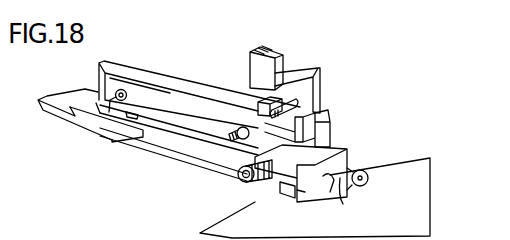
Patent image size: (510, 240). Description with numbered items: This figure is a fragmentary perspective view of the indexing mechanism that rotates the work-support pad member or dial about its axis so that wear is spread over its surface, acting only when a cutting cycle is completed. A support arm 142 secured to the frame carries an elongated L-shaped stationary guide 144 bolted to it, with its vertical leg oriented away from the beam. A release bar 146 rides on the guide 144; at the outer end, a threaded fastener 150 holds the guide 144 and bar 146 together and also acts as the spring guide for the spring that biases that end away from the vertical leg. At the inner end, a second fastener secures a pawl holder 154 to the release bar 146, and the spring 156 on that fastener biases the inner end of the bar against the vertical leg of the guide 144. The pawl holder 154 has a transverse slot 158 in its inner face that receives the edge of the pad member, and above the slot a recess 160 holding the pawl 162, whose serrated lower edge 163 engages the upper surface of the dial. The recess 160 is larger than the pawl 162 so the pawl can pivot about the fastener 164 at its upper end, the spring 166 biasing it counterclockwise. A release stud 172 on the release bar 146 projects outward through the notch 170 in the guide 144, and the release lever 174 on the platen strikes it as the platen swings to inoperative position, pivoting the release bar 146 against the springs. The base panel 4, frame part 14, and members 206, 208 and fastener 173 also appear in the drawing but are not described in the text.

The base panel 4 is at (418, 158).
The frame 14 is at (138, 233).
The support arm 142 is at (55, 97).
The stationary guide 144 is at (141, 76).
The release bar 146 is at (163, 89).
The threaded fastener 150 is at (97, 133).
The pawl holder 154 is at (340, 143).
The spring 156 is at (245, 185).
The transverse slot 158 is at (260, 172).
The recess 160 is at (300, 184).
The pawl 162 is at (353, 188).
The serrated lower edge 163 is at (342, 205).
The fastener 164 is at (357, 163).
The spring 166 is at (322, 192).
The notch 170 is at (260, 101).
The release stud 172 is at (300, 106).
The screw 173 is at (236, 128).
The release lever 174 is at (327, 76).
The member 206 is at (6, 238).
The member 208 is at (68, 238).